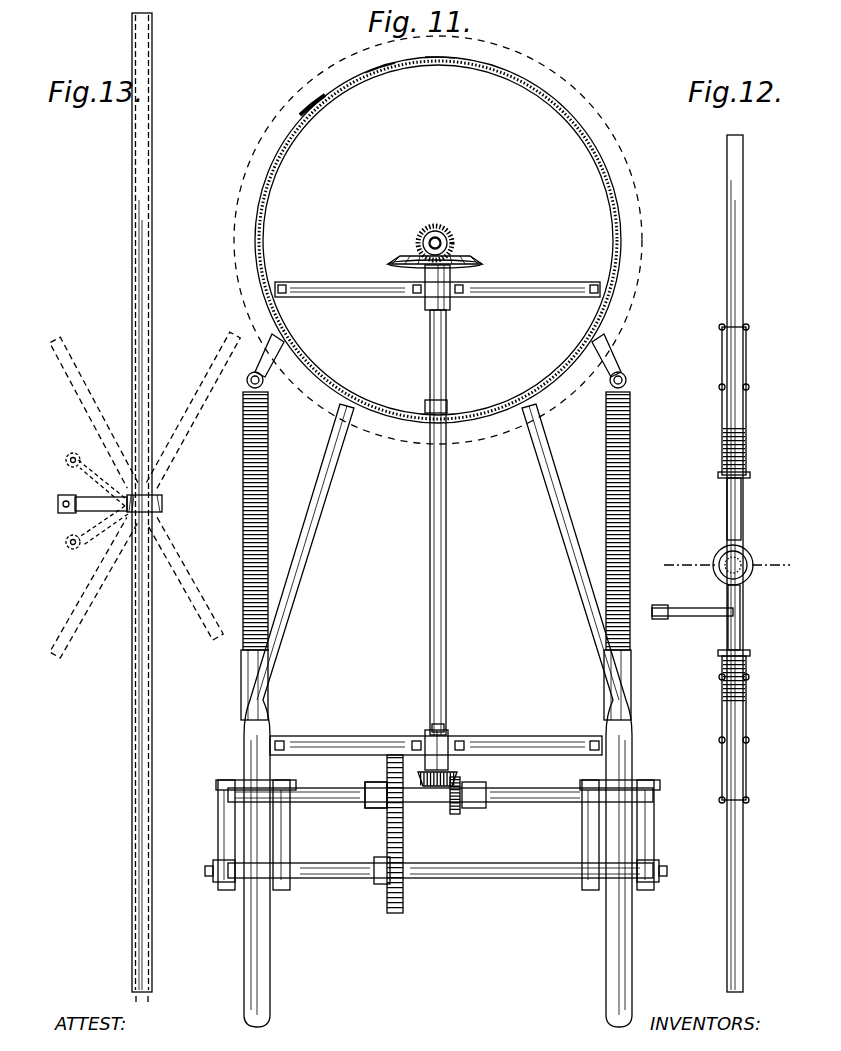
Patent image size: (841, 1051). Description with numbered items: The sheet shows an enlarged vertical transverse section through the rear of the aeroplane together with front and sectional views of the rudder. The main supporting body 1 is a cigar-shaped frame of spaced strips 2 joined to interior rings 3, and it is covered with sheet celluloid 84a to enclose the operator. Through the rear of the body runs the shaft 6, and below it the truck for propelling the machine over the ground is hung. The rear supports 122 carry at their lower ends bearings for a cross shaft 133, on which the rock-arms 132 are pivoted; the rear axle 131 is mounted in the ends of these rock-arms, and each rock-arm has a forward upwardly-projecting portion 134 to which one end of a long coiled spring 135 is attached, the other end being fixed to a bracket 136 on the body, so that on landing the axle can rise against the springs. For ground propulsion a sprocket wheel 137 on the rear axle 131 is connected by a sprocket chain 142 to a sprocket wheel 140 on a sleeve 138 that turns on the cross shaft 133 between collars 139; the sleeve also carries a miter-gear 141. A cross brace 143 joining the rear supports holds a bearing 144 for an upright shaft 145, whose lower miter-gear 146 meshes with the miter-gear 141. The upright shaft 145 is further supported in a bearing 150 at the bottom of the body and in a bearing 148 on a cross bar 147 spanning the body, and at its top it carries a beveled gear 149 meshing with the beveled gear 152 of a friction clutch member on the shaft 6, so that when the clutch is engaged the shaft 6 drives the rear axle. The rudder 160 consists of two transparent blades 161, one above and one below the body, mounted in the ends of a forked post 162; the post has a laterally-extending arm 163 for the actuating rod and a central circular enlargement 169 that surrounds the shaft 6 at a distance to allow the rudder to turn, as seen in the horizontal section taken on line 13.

In FIG. 11, the main supporting body 1 is at (498, 105).
In FIG. 11, the strips 2 is at (433, 63).
In FIG. 11, the rings 3 is at (377, 77).
In FIG. 11, the sheet celluloid 84a is at (318, 106).
In FIG. 11, the shaft 6 is at (437, 238).
In FIG. 12, the shaft 6 is at (747, 570).
In FIG. 11, the beveled gear 152 is at (452, 230).
In FIG. 11, the beveled gear 149 is at (473, 256).
In FIG. 11, the cross bar 147 is at (556, 288).
In FIG. 11, the bearing 148 is at (450, 307).
In FIG. 11, the bearing 150 is at (450, 402).
In FIG. 11, the bracket 136 is at (272, 348).
In FIG. 11, the coiled spring 135 is at (267, 468).
In FIG. 11, the upwardly-projecting portion 134 is at (242, 662).
In FIG. 11, the rear supports 122 is at (318, 526).
In FIG. 11, the upright shaft 145 is at (447, 618).
In FIG. 11, the cross brace 143 is at (570, 740).
In FIG. 11, the bearing 144 is at (448, 732).
In FIG. 11, the miter-gear 146 is at (412, 756).
In FIG. 11, the miter-gear 141 is at (462, 782).
In FIG. 11, the sprocket wheel 140 is at (386, 762).
In FIG. 11, the cross shaft 133 is at (528, 792).
In FIG. 11, the collars 139 is at (370, 783).
In FIG. 11, the sleeve 138 is at (437, 797).
In FIG. 11, the sprocket chain 142 is at (387, 833).
In FIG. 11, the sprocket wheel 137 is at (400, 852).
In FIG. 11, the rear axle 131 is at (512, 880).
In FIG. 11, the rock-arms 132 is at (287, 822).
In FIG. 12, the blades 161 is at (742, 259).
In FIG. 13, the blades 161 is at (152, 190).
In FIG. 12, the rudder 160 is at (753, 563).
In FIG. 12, the forked post 162 is at (742, 521).
In FIG. 12, the circular enlargement 169 is at (752, 555).
In FIG. 13, the circular enlargement 169 is at (162, 499).
In FIG. 12, the laterally-extending arm 163 is at (682, 617).
In FIG. 13, the laterally-extending arm 163 is at (100, 508).
In FIG. 12, the section line 13- 13 is at (728, 567).